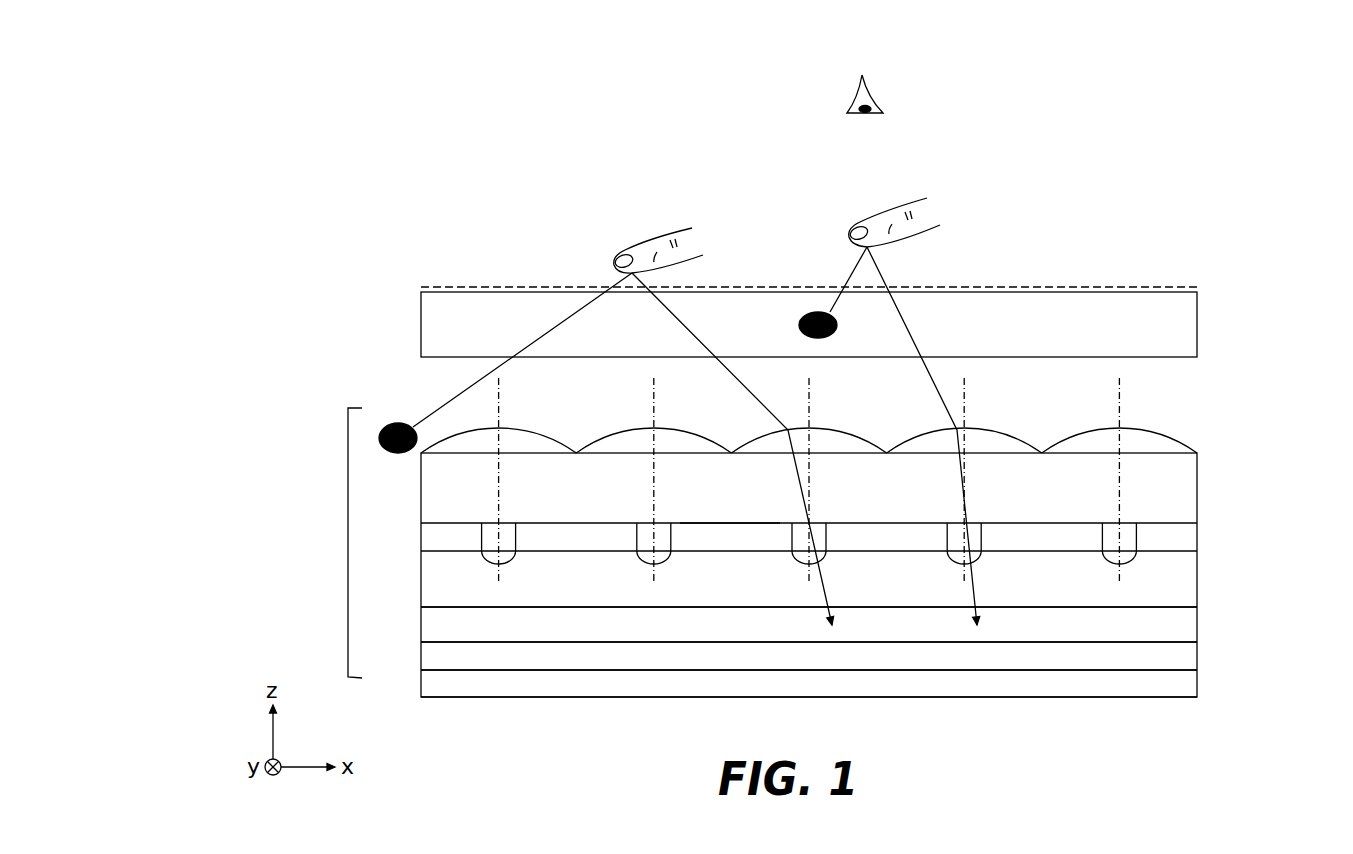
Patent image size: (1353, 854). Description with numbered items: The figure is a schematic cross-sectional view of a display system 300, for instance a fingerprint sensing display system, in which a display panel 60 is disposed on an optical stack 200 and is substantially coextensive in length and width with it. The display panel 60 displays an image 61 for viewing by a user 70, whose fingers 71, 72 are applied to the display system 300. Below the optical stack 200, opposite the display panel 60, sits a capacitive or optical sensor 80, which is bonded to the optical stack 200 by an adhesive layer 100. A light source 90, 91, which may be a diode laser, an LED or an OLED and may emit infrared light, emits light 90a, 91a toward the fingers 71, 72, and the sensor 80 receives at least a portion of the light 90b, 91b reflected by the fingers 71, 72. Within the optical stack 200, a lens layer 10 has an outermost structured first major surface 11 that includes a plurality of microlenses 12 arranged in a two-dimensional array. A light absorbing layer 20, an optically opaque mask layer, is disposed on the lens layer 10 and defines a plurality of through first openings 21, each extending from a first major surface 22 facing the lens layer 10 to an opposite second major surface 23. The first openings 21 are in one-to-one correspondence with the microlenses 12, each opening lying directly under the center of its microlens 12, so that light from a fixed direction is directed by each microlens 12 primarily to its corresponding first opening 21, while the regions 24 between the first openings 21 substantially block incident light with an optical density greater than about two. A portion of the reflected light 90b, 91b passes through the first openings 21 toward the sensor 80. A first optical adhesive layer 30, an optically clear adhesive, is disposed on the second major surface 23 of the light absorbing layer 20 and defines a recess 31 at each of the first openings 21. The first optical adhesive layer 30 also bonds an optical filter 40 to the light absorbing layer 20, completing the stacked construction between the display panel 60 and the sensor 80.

The display system 300 is at (236, 175).
The lens layer 10 is at (1234, 459).
The structured first major surface 11 is at (838, 413).
The microlens 12 is at (1153, 443).
The light absorbing layer 20 is at (848, 538).
The first opening 21 is at (490, 532).
The first major surface of light absorbing layer 22 is at (596, 522).
The second major surface of light absorbing layer 23 is at (592, 550).
The region between first openings 24 is at (735, 533).
The first optical adhesive layer 30 is at (1185, 587).
The recess 31 is at (1110, 557).
The optical filter 40 is at (1175, 627).
The adhesive layer 100 is at (1190, 653).
The optical sensor 80 is at (1183, 680).
The optical stack 200 is at (348, 543).
The display panel 60 is at (1183, 308).
The image 61 is at (1132, 285).
The user 70 is at (892, 87).
The finger 71 is at (648, 251).
The finger 72 is at (889, 215).
The light source 90 is at (388, 422).
The emitted light 90a is at (432, 418).
The reflected light 90b is at (729, 375).
The light source 91 is at (797, 325).
The emitted light 91a is at (848, 272).
The reflected light 91b is at (923, 368).